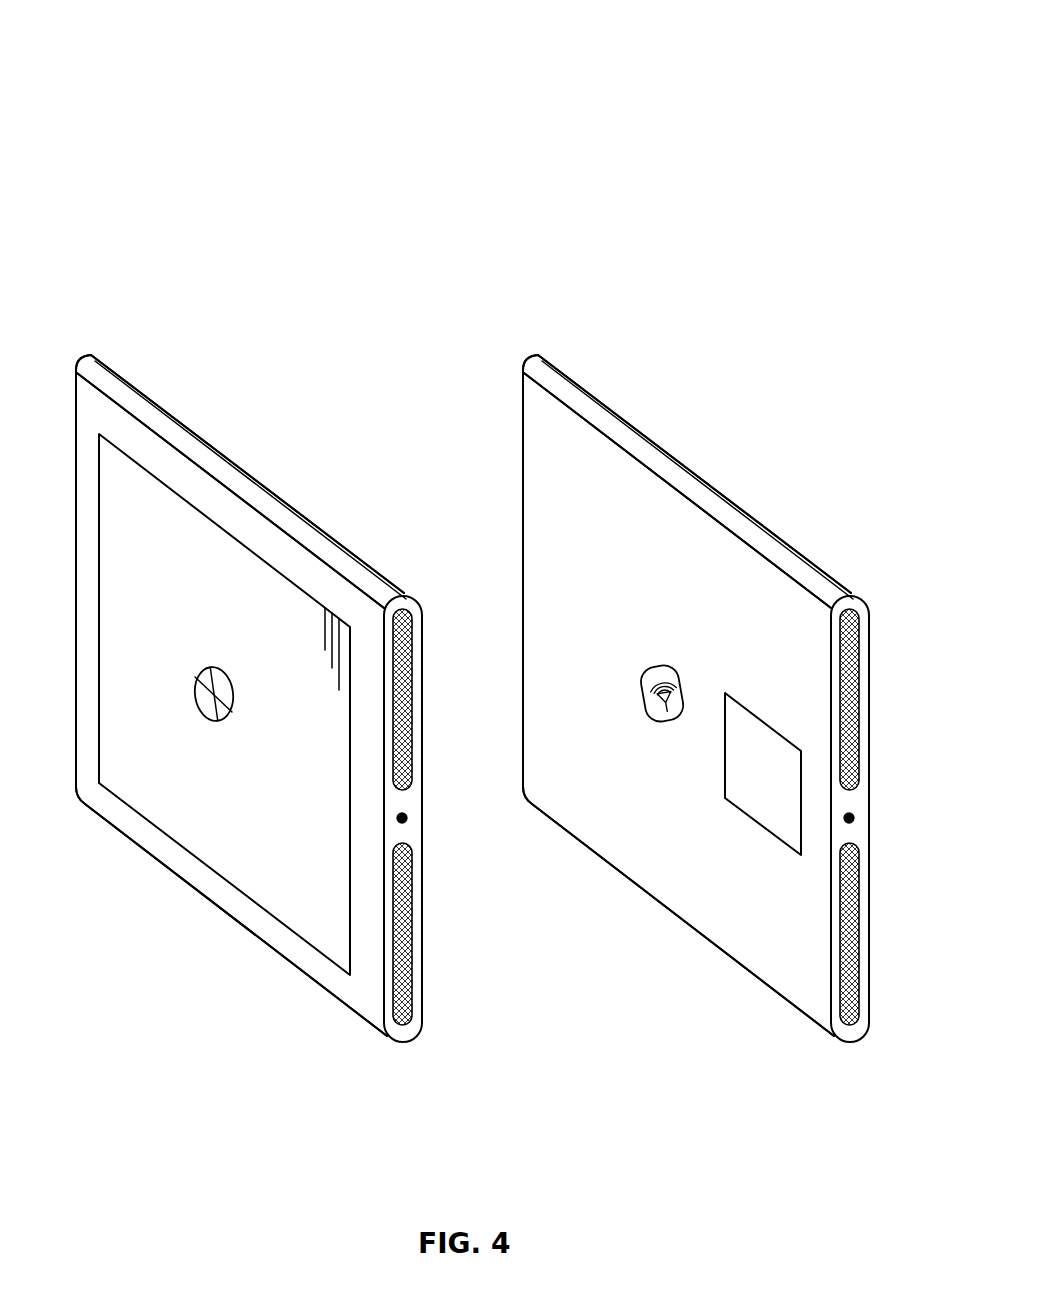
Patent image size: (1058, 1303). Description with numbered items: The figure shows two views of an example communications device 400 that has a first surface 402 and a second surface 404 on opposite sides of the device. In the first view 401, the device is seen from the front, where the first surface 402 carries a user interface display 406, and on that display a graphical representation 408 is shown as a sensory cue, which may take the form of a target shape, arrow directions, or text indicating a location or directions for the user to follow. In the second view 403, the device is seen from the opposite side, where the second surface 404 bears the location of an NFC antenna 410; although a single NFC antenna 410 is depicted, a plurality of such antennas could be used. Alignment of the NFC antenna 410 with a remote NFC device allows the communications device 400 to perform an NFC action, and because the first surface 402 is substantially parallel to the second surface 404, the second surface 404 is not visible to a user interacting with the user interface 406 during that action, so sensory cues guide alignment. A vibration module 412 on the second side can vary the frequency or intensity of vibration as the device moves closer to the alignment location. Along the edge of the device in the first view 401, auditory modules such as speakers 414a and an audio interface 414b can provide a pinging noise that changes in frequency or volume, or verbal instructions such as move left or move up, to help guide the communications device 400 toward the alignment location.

The communications device 400 is at (422, 71).
The first view 401 is at (235, 268).
The first surface 402 is at (102, 410).
The second view 403 is at (696, 267).
The second surface 404 is at (540, 446).
The user interface display 406 is at (187, 497).
The graphical representation 408 is at (207, 668).
The NFC antenna 410 is at (657, 667).
The vibration module 412 is at (754, 717).
The speakers 414a is at (410, 609).
The audio interface 414b is at (404, 813).